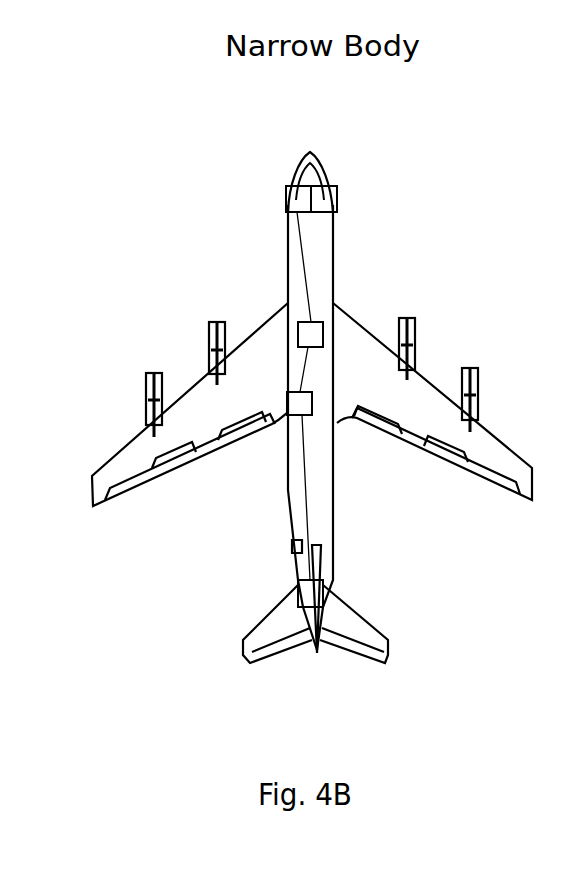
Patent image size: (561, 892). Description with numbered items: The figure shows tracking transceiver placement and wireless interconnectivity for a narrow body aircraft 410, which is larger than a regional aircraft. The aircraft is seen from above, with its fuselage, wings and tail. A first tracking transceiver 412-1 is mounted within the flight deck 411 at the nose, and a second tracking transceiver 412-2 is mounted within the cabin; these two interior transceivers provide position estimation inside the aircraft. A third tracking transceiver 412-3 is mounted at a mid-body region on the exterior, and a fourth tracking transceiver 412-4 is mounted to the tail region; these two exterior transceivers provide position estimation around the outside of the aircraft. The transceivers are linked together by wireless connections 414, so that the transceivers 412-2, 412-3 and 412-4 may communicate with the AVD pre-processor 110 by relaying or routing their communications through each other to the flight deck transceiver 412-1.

The narrow body aircraft 410 is at (163, 177).
The flight deck 411 is at (305, 156).
The tracking transceiver 412-1 is at (286, 199).
The AVD pre-processor 110 is at (338, 199).
The wireless connections 414 is at (305, 280).
The tracking transceiver 412-2 is at (298, 335).
The tracking transceiver 412-3 is at (296, 418).
The tracking transceiver 412-4 is at (298, 590).